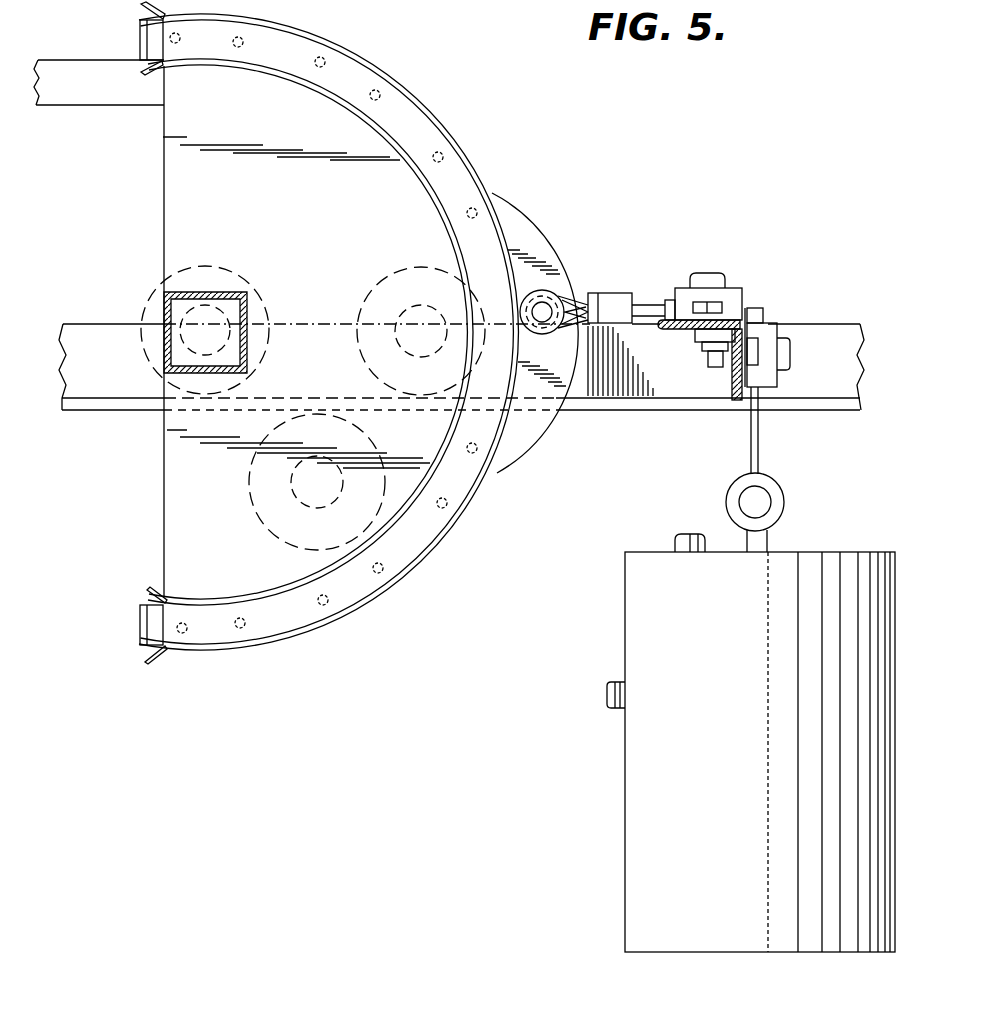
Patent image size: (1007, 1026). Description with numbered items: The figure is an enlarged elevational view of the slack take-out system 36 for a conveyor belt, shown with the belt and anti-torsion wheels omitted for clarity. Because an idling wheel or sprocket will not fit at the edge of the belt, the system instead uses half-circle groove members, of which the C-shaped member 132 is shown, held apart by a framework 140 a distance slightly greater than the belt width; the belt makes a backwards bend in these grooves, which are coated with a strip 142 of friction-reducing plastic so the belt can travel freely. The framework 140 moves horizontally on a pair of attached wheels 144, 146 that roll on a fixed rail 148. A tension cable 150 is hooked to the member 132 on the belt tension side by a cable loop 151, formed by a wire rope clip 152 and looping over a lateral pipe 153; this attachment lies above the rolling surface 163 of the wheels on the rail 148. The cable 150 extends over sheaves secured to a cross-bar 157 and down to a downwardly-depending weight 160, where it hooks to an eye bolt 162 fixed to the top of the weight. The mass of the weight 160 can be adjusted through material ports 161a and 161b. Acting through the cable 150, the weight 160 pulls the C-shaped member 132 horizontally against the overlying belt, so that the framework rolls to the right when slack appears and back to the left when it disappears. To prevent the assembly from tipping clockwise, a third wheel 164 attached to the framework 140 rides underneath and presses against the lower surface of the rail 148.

The slack take-out system 36 is at (643, 220).
The half-circle groove member 132 is at (327, 622).
The framework 140 is at (165, 308).
The strip 142 is at (398, 107).
The wheel 144 is at (152, 360).
The wheel 146 is at (430, 414).
The rail 148 is at (580, 384).
The tension cable 150 is at (652, 300).
The cable loop 151 is at (584, 301).
The wire rope clip 152 is at (612, 293).
The lateral pipe 153 is at (546, 300).
The cross-bar 157 is at (737, 402).
The weight 160 is at (745, 695).
The material port 161a is at (677, 543).
The material port 161b is at (617, 710).
The eye bolt 162 is at (762, 540).
The rolling surface 163 is at (366, 407).
The third wheel 164 is at (268, 514).